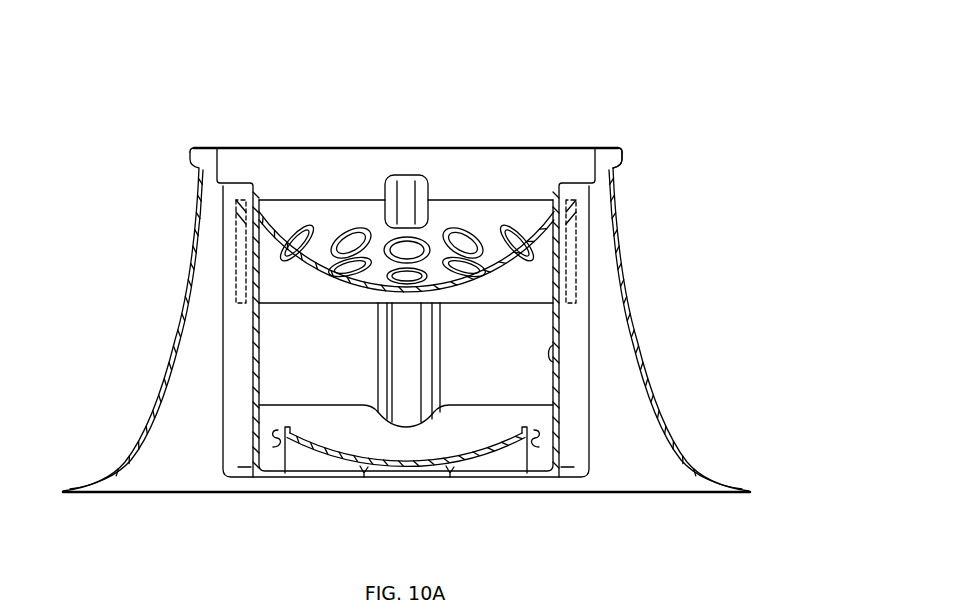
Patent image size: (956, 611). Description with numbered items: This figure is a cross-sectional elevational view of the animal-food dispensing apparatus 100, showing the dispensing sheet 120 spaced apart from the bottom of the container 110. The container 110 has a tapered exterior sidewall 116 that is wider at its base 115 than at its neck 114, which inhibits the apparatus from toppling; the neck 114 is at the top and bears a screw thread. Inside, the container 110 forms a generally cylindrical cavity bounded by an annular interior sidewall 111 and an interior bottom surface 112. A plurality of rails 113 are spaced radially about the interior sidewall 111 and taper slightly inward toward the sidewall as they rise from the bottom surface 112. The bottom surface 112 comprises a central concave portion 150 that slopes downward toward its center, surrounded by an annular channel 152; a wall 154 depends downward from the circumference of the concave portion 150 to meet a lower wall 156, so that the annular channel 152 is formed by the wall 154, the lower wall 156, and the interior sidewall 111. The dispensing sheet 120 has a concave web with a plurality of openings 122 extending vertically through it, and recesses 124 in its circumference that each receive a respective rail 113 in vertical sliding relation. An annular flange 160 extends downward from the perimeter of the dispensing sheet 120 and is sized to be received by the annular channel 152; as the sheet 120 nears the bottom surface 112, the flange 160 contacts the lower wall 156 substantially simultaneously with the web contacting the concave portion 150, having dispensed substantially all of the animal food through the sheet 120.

The animal-food dispensing apparatus 100 is at (762, 196).
The container 110 is at (672, 420).
The interior sidewall 111 is at (557, 365).
The interior bottom surface 112 is at (460, 460).
The rails 113 is at (413, 190).
The neck 114 is at (622, 164).
The base 115 is at (750, 492).
The exterior sidewall 116 is at (631, 287).
The dispensing sheet 120 is at (530, 203).
The openings 122 is at (468, 235).
The recesses 124 is at (387, 218).
The concave portion 150 is at (396, 462).
The annular channel 152 is at (268, 437).
The wall 154 is at (284, 455).
The lower wall 156 is at (551, 465).
The annular flange 160 is at (293, 305).